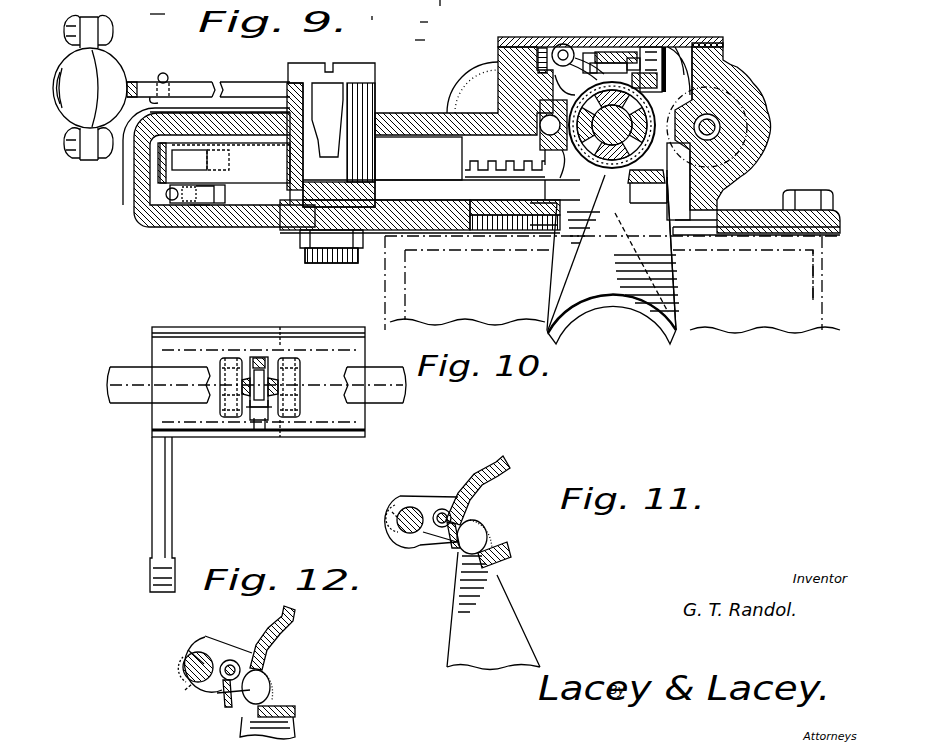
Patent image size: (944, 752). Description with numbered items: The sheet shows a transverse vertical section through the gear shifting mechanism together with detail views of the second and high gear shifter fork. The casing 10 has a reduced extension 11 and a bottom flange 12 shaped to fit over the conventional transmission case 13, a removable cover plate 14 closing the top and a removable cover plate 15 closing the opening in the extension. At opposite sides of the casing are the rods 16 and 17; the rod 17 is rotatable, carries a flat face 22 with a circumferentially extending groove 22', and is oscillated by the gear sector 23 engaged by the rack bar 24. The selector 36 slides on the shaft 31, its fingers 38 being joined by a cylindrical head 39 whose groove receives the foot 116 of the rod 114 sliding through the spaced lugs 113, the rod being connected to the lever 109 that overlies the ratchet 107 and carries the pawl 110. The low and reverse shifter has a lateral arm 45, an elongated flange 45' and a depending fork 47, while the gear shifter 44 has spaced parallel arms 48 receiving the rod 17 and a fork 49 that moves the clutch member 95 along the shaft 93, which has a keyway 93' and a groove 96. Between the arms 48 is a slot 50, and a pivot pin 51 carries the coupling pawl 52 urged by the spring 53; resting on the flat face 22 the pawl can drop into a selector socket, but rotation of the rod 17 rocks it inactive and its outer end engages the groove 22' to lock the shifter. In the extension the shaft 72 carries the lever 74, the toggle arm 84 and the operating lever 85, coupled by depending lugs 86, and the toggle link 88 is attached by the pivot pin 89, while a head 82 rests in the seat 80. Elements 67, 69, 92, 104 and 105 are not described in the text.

In FIG. 9, the casing 10 is at (772, 123).
In FIG. 9, the reduced extension 11 is at (134, 163).
In FIG. 10, the reduced extension 11 is at (272, 320).
In FIG. 9, the bottom flange 12 is at (805, 208).
In FIG. 9, the transmission case 13 is at (826, 304).
In FIG. 9, the removable cover plate 14 is at (688, 42).
In FIG. 9, the removable cover plate 15 is at (205, 112).
In FIG. 9, the rod 16 is at (712, 112).
In FIG. 10, the rod 17 is at (384, 405).
In FIG. 11, the rod 17 is at (400, 527).
In FIG. 12, the rod 17 is at (199, 653).
In FIG. 12, the flat face 22 is at (176, 640).
In FIG. 11, the circumferentially extending groove 22' is at (372, 523).
In FIG. 12, the circumferentially extending groove 22' is at (163, 701).
In FIG. 9, the gear sector 23 is at (517, 158).
In FIG. 9, the rack bar 24 is at (500, 185).
In FIG. 9, the shaft 31 is at (612, 125).
In FIG. 9, the selector 36 is at (598, 180).
In FIG. 9, the fingers 38 is at (646, 181).
In FIG. 11, the fingers 38 is at (495, 530).
In FIG. 12, the fingers 38 is at (312, 682).
In FIG. 9, the cylindrical head 39 is at (623, 197).
In FIG. 10, the gear shifter 44 is at (326, 345).
In FIG. 11, the gear shifter 44 is at (505, 553).
In FIG. 12, the gear shifter 44 is at (296, 710).
In FIG. 9, the arm 45 is at (678, 181).
In FIG. 9, the elongated flange 45' is at (720, 51).
In FIG. 9, the fork 47 is at (680, 268).
In FIG. 9, the spaced parallel arms 48 is at (540, 180).
In FIG. 10, the spaced parallel arms 48 is at (232, 358).
In FIG. 11, the spaced parallel arms 48 is at (418, 495).
In FIG. 12, the spaced parallel arms 48 is at (172, 672).
In FIG. 9, the fork 49 is at (553, 266).
In FIG. 10, the fork 49 is at (160, 521).
In FIG. 11, the fork 49 is at (462, 619).
In FIG. 12, the fork 49 is at (296, 733).
In FIG. 10, the slot 50 is at (264, 420).
In FIG. 11, the slot 50 is at (470, 528).
In FIG. 12, the slot 50 is at (262, 675).
In FIG. 10, the pivot pin 51 is at (300, 378).
In FIG. 11, the pivot pin 51 is at (446, 508).
In FIG. 12, the pivot pin 51 is at (234, 660).
In FIG. 9, the coupling pawl 52 is at (564, 180).
In FIG. 10, the coupling pawl 52 is at (258, 418).
In FIG. 11, the coupling pawl 52 is at (450, 540).
In FIG. 12, the coupling pawl 52 is at (268, 700).
In FIG. 10, the spring 53 is at (272, 412).
In FIG. 11, the spring 53 is at (430, 545).
In FIG. 12, the spring 53 is at (226, 699).
In FIG. 9, the pivot 67 is at (735, 118).
In FIG. 9, the cam lever 69 is at (606, 55).
In FIG. 9, the shaft 72 is at (338, 70).
In FIG. 9, the lever 74 is at (410, 188).
In FIG. 9, the seat 80 is at (172, 205).
In FIG. 9, the head 82 is at (165, 203).
In FIG. 9, the toggle arm 84 is at (225, 163).
In FIG. 9, the operating lever 85 is at (237, 82).
In FIG. 9, the depending lugs 86 is at (330, 148).
In FIG. 9, the toggle link 88 is at (160, 162).
In FIG. 9, the pivot pin 89 is at (200, 228).
In FIG. 9, the knob stem 92 is at (157, 7).
In FIG. 9, the shaft 93 is at (372, 10).
In FIG. 9, the keyway 93' is at (418, 31).
In FIG. 9, the clutch member 95 is at (427, 0).
In FIG. 9, the groove 96 is at (447, 12).
In FIG. 9, the housing portion 104 is at (680, 83).
In FIG. 9, the knob 105 is at (121, 64).
In FIG. 9, the ratchet 107 is at (626, 52).
In FIG. 9, the lever 109 is at (645, 48).
In FIG. 9, the pawl 110 is at (668, 46).
In FIG. 9, the spaced lugs 113 is at (543, 50).
In FIG. 9, the rod 114 is at (566, 44).
In FIG. 9, the foot 116 is at (518, 83).